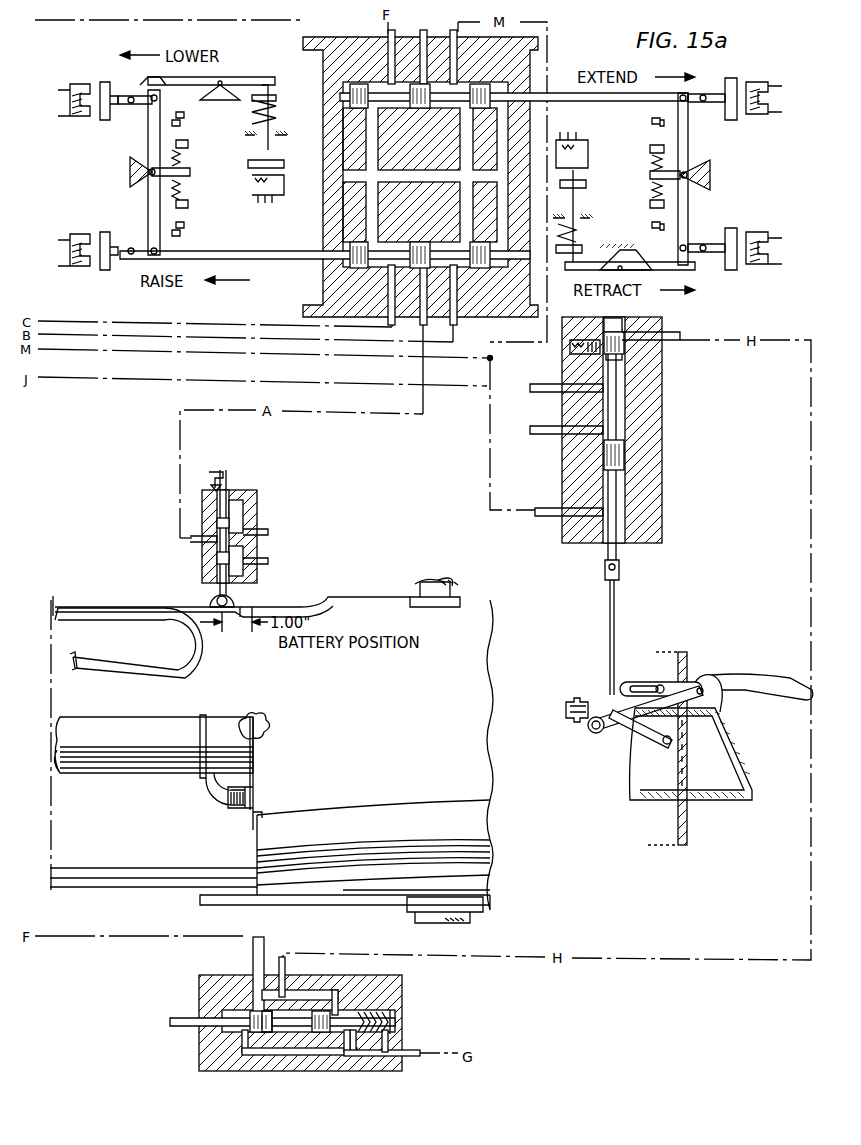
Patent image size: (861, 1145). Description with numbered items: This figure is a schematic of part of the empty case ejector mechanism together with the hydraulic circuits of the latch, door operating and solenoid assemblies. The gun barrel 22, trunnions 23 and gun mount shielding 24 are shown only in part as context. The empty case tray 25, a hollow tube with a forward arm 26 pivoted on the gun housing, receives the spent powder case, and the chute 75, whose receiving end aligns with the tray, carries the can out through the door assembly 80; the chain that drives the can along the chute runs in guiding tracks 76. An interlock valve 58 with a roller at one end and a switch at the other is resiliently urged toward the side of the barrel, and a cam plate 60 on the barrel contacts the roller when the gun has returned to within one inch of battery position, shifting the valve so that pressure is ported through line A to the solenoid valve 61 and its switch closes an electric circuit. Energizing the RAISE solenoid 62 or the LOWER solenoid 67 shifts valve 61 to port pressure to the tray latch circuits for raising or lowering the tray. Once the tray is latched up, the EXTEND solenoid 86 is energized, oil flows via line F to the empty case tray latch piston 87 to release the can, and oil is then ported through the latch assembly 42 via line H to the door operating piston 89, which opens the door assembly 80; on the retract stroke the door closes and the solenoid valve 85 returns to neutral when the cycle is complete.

The gun barrel 22 is at (318, 605).
The trunnions 23 is at (428, 580).
The gun mount shielding 24 is at (690, 650).
The empty case tray 25 is at (98, 722).
The forward arm 26 is at (233, 808).
The latch assembly 42 is at (200, 983).
The interlock valve 58 is at (262, 512).
The cam plate 60 is at (205, 605).
The solenoid valve 61 is at (418, 242).
The solenoid 62 is at (82, 215).
The solenoid 67 is at (76, 70).
The chute 75 is at (345, 840).
The guiding tracks 76 is at (132, 672).
The door assembly 80 is at (740, 740).
The solenoid valve 85 is at (420, 108).
The solenoid 86 is at (752, 74).
The empty case tray latch piston 87 is at (268, 1032).
The door operating piston 89 is at (626, 367).